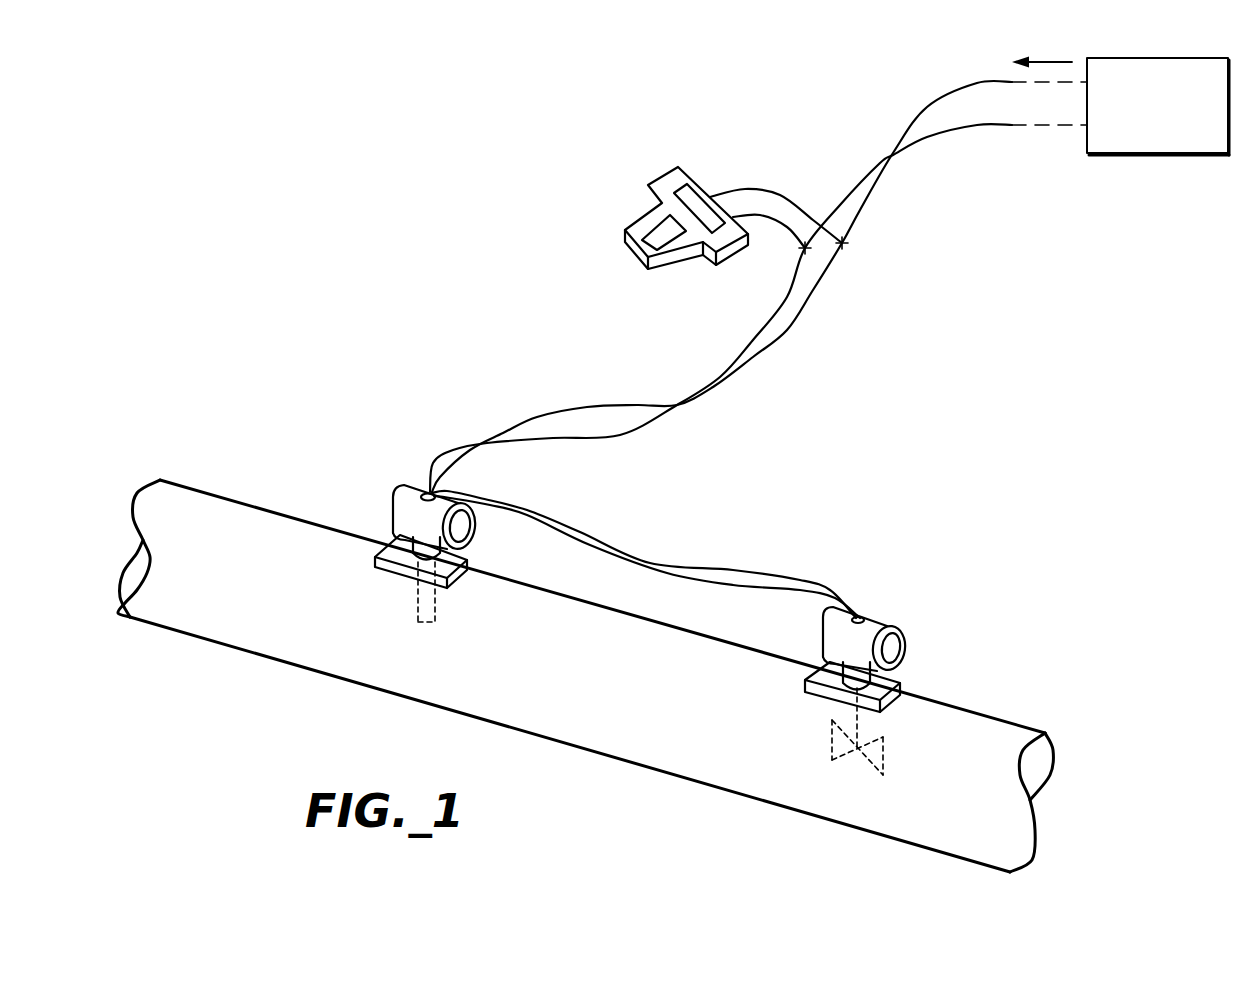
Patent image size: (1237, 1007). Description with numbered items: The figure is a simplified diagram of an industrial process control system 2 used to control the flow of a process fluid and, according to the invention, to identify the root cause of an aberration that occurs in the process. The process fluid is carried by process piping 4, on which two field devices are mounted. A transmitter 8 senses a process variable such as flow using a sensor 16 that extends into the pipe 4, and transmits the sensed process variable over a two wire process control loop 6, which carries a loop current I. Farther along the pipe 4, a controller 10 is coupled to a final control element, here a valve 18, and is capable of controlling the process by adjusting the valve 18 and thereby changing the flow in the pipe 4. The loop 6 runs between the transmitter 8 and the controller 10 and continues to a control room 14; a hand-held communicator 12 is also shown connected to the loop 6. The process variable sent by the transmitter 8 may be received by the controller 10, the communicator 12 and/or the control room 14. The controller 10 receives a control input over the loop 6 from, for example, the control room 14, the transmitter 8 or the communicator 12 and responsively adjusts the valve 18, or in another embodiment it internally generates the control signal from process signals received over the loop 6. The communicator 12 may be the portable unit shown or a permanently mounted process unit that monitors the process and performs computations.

The industrial process control system 2 is at (356, 322).
The process piping 4 is at (245, 522).
The two wire process control loop 6 is at (770, 303).
The transmitter 8 is at (484, 532).
The controller 10 is at (880, 618).
The communicator 12 is at (665, 175).
The control room 14 is at (1137, 155).
The sensor 16 is at (437, 603).
The valve 18 is at (885, 757).